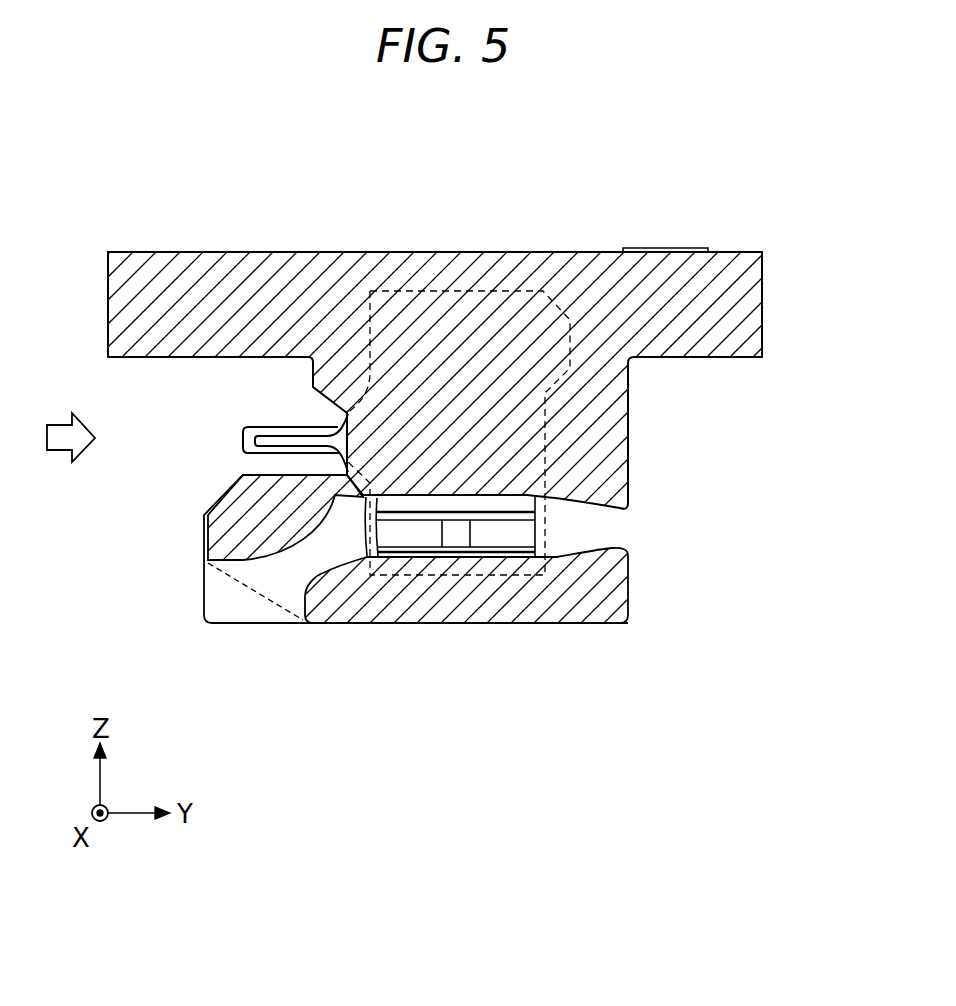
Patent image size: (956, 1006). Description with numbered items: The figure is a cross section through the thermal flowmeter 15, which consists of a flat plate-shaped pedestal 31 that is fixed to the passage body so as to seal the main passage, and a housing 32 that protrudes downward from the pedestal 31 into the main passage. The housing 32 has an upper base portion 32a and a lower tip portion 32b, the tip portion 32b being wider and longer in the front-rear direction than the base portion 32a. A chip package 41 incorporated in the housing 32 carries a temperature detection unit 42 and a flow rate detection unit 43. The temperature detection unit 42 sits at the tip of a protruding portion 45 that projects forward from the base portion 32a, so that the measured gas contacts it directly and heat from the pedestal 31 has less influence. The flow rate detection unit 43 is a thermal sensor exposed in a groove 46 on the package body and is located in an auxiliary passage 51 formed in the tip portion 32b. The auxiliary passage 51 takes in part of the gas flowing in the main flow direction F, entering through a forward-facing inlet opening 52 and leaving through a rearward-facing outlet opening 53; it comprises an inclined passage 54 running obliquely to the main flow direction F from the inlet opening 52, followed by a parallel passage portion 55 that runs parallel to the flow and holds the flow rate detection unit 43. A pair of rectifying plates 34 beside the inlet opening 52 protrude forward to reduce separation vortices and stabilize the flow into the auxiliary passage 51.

The thermal flowmeter 15 is at (128, 188).
The pedestal 31 is at (748, 300).
The housing 32 is at (478, 478).
The base portion 32a is at (605, 452).
The tip portion 32b is at (757, 458).
The rectifying plates 34 is at (223, 613).
The chip package 41 is at (497, 300).
The temperature detection unit 42 is at (261, 423).
The flow rate detection unit 43 is at (456, 598).
The protruding portion 45 is at (302, 432).
The groove 46 is at (513, 535).
The auxiliary passage 51 is at (292, 566).
The inlet opening 52 is at (254, 591).
The outlet opening 53 is at (630, 535).
The inclined passage 54 is at (330, 543).
The parallel passage portion 55 is at (568, 535).
The main flow direction F is at (58, 420).